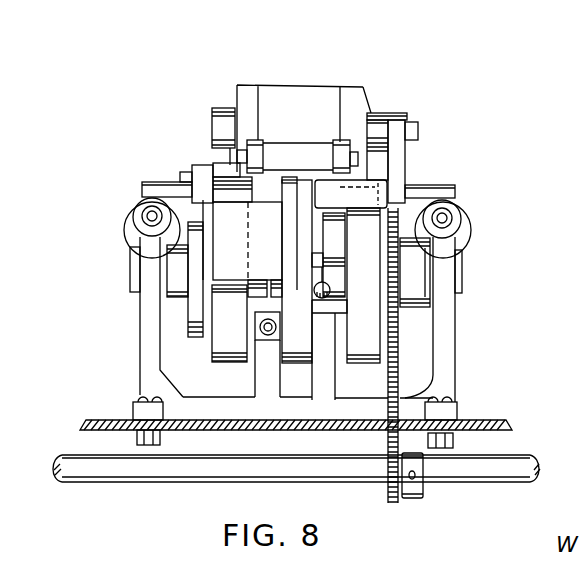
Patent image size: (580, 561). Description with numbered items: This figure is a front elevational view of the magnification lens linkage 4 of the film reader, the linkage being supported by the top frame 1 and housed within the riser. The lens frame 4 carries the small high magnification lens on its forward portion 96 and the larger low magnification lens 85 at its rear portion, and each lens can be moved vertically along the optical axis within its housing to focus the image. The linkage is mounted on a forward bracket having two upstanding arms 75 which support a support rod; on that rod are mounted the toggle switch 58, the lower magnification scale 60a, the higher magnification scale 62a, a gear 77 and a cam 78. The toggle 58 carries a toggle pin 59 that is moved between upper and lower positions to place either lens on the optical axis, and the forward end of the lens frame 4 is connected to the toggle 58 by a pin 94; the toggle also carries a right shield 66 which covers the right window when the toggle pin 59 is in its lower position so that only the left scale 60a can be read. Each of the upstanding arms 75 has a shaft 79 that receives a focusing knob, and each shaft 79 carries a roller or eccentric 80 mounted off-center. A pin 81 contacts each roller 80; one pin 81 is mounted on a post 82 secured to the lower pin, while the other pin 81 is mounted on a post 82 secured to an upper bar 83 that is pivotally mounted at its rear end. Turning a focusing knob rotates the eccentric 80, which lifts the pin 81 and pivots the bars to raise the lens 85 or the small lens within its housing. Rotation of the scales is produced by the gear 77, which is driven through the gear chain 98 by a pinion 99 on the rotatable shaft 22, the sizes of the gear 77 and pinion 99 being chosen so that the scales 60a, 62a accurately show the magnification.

The top frame 1 is at (107, 420).
The magnification lens linkage 4 is at (332, 77).
The rotatable shaft 22 is at (160, 483).
The toggle switch 58 is at (293, 347).
The toggle pin 59 is at (290, 224).
The left scale 60a is at (228, 363).
The right scale 62a is at (373, 340).
The right shield 66 is at (323, 180).
The upstanding arms 75 is at (138, 370).
The gear 77 is at (402, 304).
The cam 78 is at (192, 320).
The shaft 79 is at (450, 218).
The roller or eccentric 80 is at (472, 242).
The pin 81 is at (450, 185).
The post 82 is at (402, 153).
The upper bar 83 is at (217, 108).
The magnification lens 85 is at (378, 113).
The pin 94 is at (240, 155).
The forward portion 96 is at (353, 98).
The gear chain 98 is at (410, 398).
The pinion 99 is at (390, 506).